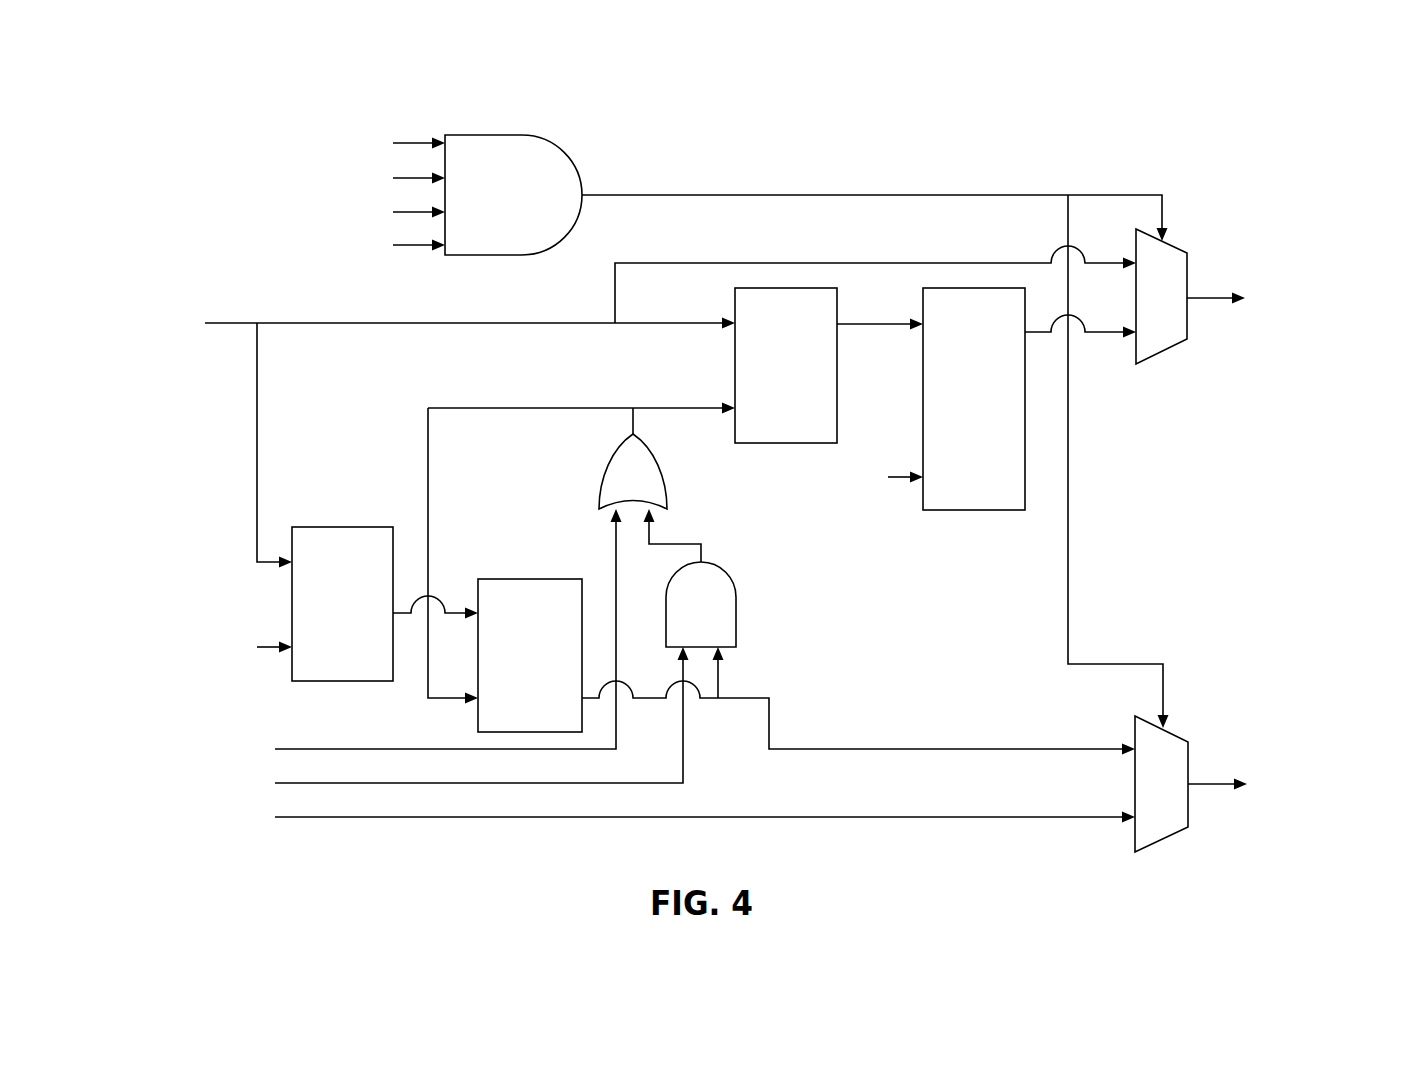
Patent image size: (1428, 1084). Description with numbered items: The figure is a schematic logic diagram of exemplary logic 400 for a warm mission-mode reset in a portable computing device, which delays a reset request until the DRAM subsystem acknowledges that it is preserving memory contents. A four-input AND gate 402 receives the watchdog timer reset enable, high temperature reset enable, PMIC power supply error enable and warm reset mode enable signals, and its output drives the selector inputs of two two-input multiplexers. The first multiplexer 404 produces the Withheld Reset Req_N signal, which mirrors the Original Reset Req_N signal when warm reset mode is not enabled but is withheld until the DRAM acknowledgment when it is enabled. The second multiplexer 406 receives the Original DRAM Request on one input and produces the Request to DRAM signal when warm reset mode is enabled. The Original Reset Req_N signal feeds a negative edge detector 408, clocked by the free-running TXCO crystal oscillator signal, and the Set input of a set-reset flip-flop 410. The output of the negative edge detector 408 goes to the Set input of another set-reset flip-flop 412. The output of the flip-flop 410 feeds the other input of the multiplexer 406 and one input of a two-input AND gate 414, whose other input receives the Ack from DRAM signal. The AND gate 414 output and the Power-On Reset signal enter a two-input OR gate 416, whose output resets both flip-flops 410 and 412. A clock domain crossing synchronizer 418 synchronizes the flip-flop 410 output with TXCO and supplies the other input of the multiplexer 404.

The logic 400 is at (1222, 150).
The 4-input AND gate 402 is at (488, 206).
The 2-input multiplexer 404 is at (1142, 308).
The 2-input multiplexer 406 is at (1142, 796).
The negative edge detector 408 is at (322, 656).
The set-reset flip-flop 410 is at (767, 376).
The set-reset flip-flop 412 is at (510, 666).
The 2-input AND gate 414 is at (681, 616).
The 2-input OR gate 416 is at (613, 489).
The clock domain crossing synchronizer 418 is at (954, 464).